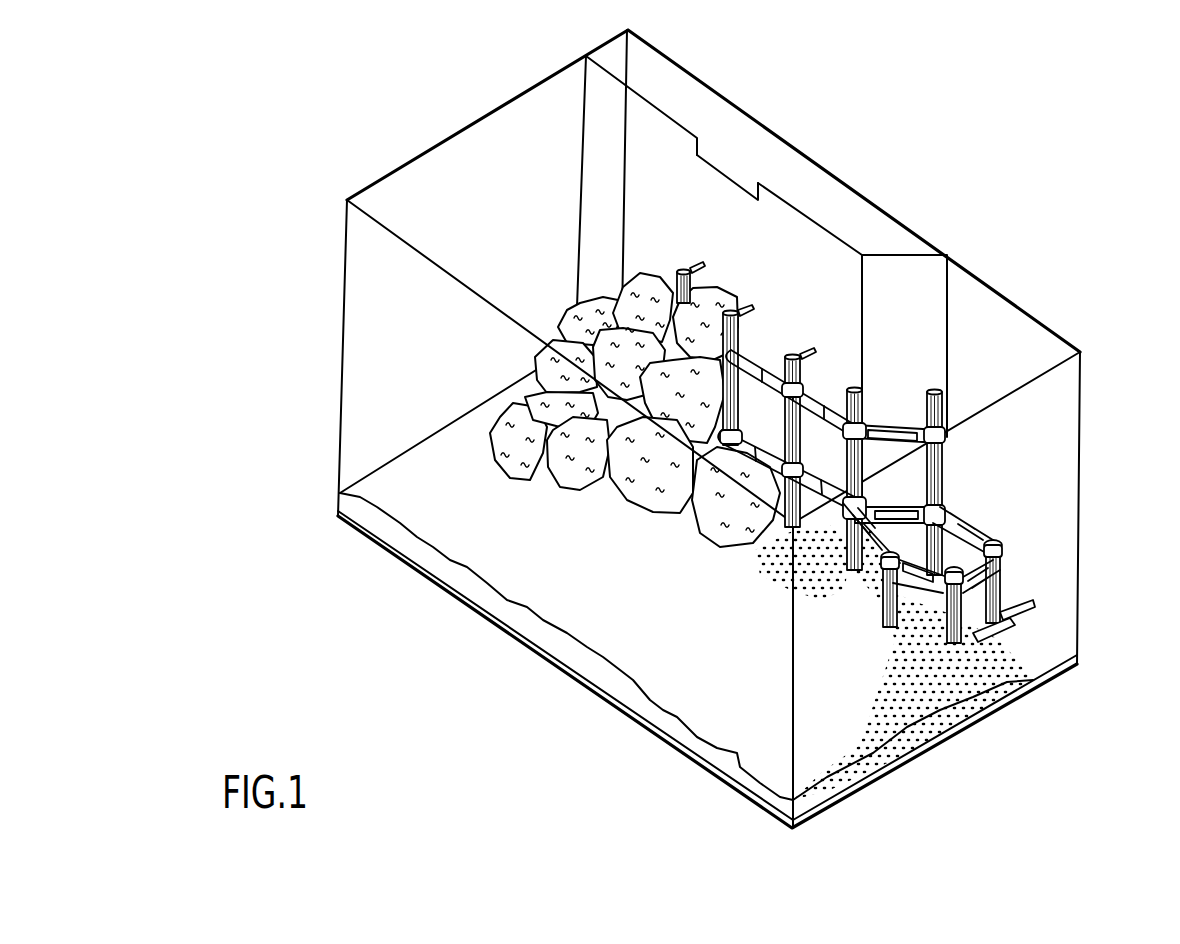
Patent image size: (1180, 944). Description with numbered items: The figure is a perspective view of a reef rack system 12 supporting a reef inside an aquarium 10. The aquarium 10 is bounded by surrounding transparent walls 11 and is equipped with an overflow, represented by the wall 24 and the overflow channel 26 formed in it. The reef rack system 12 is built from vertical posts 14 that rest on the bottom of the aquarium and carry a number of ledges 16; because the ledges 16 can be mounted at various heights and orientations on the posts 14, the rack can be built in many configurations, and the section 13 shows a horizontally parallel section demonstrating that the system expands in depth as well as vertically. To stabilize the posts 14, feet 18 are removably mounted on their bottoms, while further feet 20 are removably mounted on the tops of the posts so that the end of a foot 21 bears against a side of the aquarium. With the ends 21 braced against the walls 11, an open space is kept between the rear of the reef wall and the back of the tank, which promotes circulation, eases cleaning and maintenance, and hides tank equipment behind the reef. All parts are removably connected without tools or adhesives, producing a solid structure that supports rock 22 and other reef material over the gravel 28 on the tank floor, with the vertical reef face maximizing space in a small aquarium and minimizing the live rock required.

The aquarium 10 is at (530, 652).
The transparent walls 11 is at (425, 150).
The reef rack system 12 is at (894, 443).
The section 13 is at (993, 583).
The posts 14 is at (742, 335).
The ledges 16 is at (823, 385).
The feet 18 is at (995, 637).
The feet 20 is at (693, 263).
The end of a foot 21 is at (810, 347).
The rocks 22 is at (503, 467).
The wall 24 is at (673, 118).
The overflow channel 26 is at (726, 175).
The gravel 28 is at (782, 558).